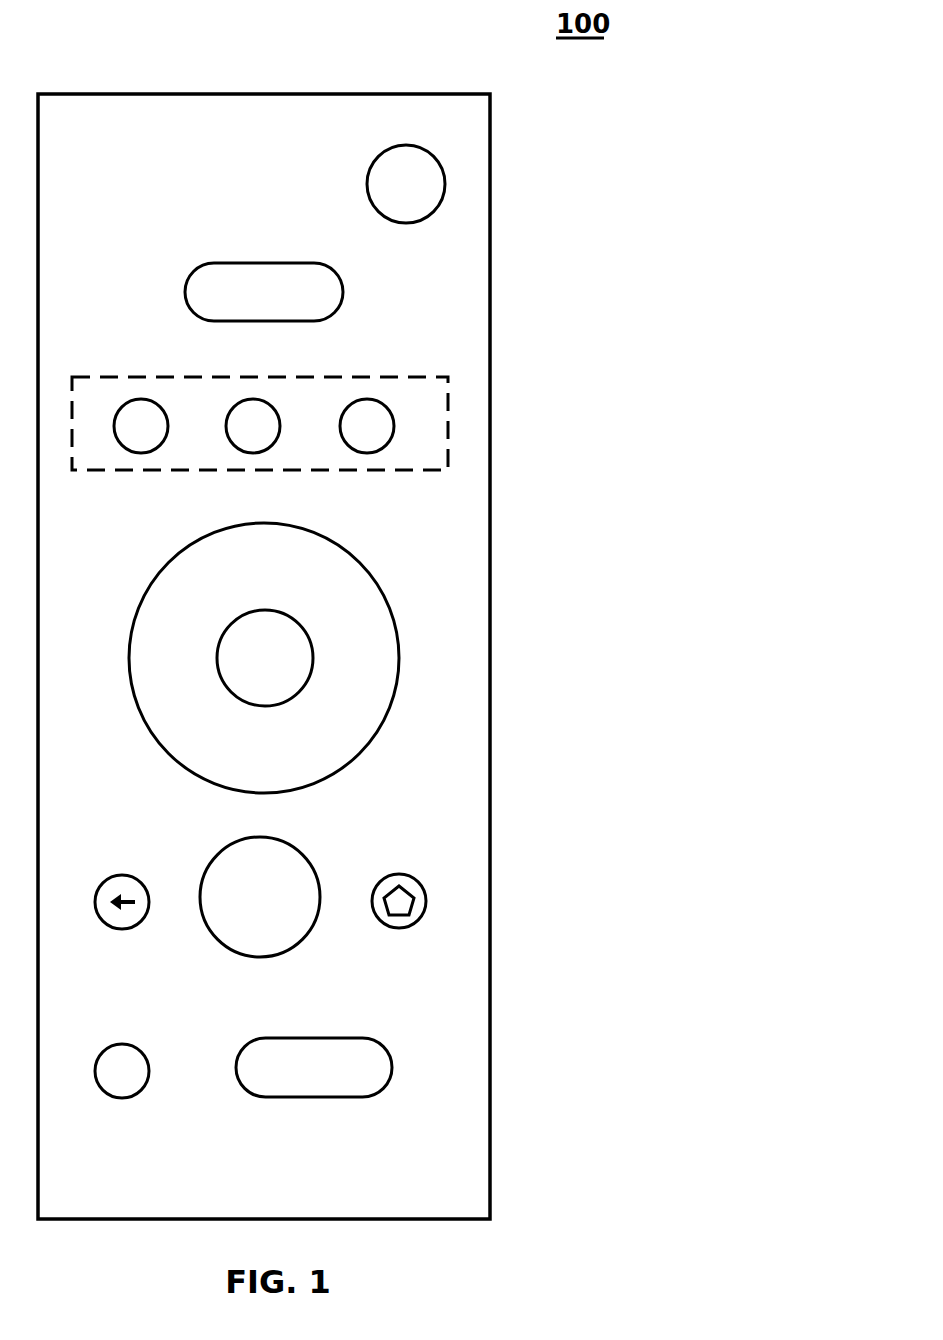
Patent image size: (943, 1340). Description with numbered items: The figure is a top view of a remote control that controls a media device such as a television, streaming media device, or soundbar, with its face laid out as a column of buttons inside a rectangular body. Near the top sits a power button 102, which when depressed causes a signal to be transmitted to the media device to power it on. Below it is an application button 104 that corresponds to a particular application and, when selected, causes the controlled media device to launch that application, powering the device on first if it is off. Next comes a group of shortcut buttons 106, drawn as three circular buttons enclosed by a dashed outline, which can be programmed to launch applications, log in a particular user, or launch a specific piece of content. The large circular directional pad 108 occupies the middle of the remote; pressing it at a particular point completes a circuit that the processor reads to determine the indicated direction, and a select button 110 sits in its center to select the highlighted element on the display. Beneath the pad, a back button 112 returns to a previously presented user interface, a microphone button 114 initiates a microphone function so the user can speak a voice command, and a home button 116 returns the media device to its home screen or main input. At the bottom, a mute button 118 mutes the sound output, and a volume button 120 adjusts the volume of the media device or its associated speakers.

The power button 102 is at (444, 172).
The application button 104 is at (342, 275).
The group of shortcut buttons 106 is at (290, 397).
The directional pad 108 is at (291, 571).
The select button 110 is at (287, 657).
The back button 112 is at (115, 875).
The microphone button 114 is at (307, 853).
The home button 116 is at (426, 893).
The mute button 118 is at (110, 1045).
The volume button 120 is at (337, 1038).